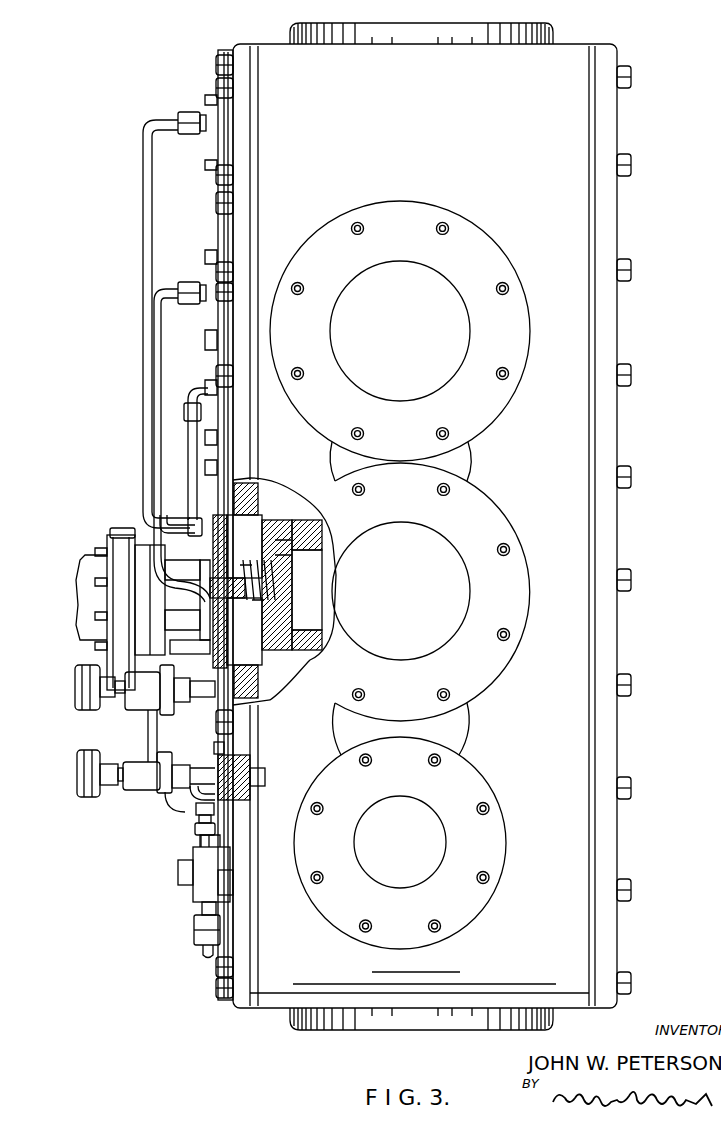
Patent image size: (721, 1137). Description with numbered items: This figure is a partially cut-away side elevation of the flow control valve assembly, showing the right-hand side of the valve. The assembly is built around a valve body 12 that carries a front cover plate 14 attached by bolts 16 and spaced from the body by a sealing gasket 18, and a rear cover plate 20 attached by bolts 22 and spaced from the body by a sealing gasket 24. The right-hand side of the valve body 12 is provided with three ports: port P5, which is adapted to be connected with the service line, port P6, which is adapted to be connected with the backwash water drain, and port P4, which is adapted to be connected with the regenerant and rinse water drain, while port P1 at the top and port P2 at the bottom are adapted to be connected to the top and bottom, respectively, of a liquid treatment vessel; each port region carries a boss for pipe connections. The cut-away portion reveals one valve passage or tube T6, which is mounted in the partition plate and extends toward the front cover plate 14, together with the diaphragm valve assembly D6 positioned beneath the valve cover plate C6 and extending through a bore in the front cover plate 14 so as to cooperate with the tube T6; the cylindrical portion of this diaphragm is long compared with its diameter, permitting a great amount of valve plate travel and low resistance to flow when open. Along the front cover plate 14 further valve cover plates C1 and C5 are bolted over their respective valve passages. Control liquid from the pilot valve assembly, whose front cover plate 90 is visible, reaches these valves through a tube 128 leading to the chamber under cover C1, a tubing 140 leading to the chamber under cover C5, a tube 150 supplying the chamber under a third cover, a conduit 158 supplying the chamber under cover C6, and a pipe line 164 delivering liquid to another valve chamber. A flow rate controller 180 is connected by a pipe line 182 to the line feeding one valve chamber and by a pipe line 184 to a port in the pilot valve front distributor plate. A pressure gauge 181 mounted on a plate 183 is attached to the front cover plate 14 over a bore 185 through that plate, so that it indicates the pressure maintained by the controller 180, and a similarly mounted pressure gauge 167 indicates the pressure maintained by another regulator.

The valve body 12 is at (420, 110).
The front cover plate 14 is at (211, 509).
The bolts 16 is at (222, 66).
The sealing gasket 18 is at (258, 44).
The rear cover plate 20 is at (640, 530).
The bolts 22 is at (631, 80).
The sealing gasket 24 is at (570, 139).
The port P1 is at (553, 19).
The port P2 is at (334, 1034).
The port P4 is at (406, 854).
The port P5 is at (410, 349).
The port P6 is at (415, 598).
The valve cover plate C1 is at (214, 151).
The valve cover plate C5 is at (215, 318).
The valve cover plate C6 is at (226, 558).
The diaphragm valve assembly D6 is at (247, 635).
The valve passage or tube T6 is at (288, 591).
The front cover plate 90 is at (143, 604).
The tube 128 is at (158, 320).
The pipe line or tubing 140 is at (159, 442).
The pipe or tube 150 is at (197, 457).
The conduit 158 is at (168, 515).
The pipe line 164 is at (150, 738).
The pressure gauge 167 is at (75, 689).
The flow rate controller 180 is at (200, 896).
The pressure gauge 181 is at (75, 782).
The pipe line 182 is at (189, 808).
The plate 183 is at (220, 751).
The pipe line 184 is at (205, 953).
The bore 185 is at (253, 768).